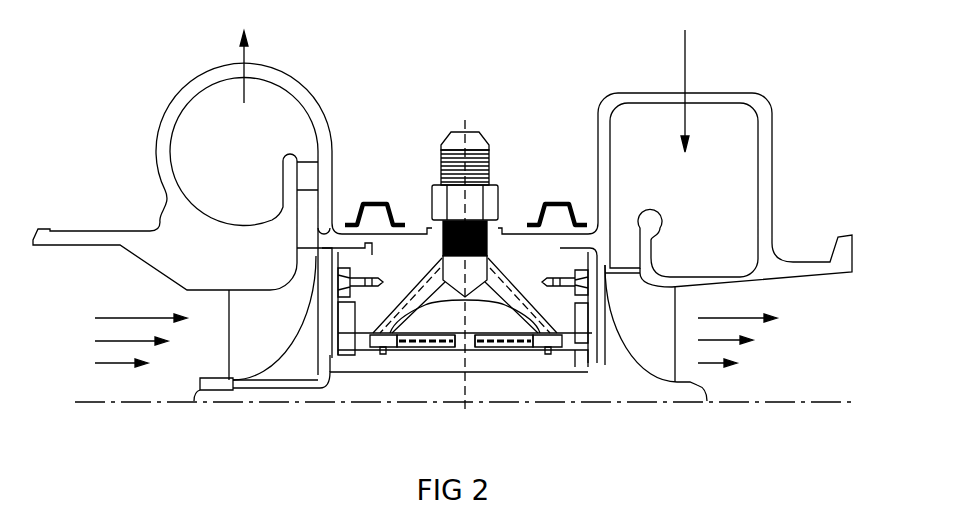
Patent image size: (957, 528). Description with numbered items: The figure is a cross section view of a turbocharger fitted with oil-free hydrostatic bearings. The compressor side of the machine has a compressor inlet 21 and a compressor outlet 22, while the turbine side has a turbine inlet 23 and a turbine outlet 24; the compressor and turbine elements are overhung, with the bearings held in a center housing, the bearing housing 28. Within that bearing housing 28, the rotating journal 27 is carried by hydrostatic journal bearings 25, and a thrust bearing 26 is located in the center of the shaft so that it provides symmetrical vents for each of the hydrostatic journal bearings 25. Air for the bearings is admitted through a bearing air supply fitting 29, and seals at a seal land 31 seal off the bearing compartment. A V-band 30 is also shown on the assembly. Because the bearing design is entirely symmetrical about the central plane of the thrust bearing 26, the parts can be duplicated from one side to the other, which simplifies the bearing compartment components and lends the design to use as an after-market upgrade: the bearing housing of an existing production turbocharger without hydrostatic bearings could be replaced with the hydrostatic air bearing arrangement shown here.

The compressor inlet 21 is at (150, 327).
The compressor outlet 22 is at (225, 115).
The turbine inlet 23 is at (720, 162).
The turbine outlet 24 is at (730, 327).
The journal bearing 25 is at (402, 348).
The thrust bearing 26 is at (470, 345).
The rotating journal 27 is at (489, 362).
The bearing housing 28 is at (505, 250).
The bearing air supply fitting 29 is at (474, 143).
The V-band 30 is at (375, 207).
The seal land 31 is at (342, 335).